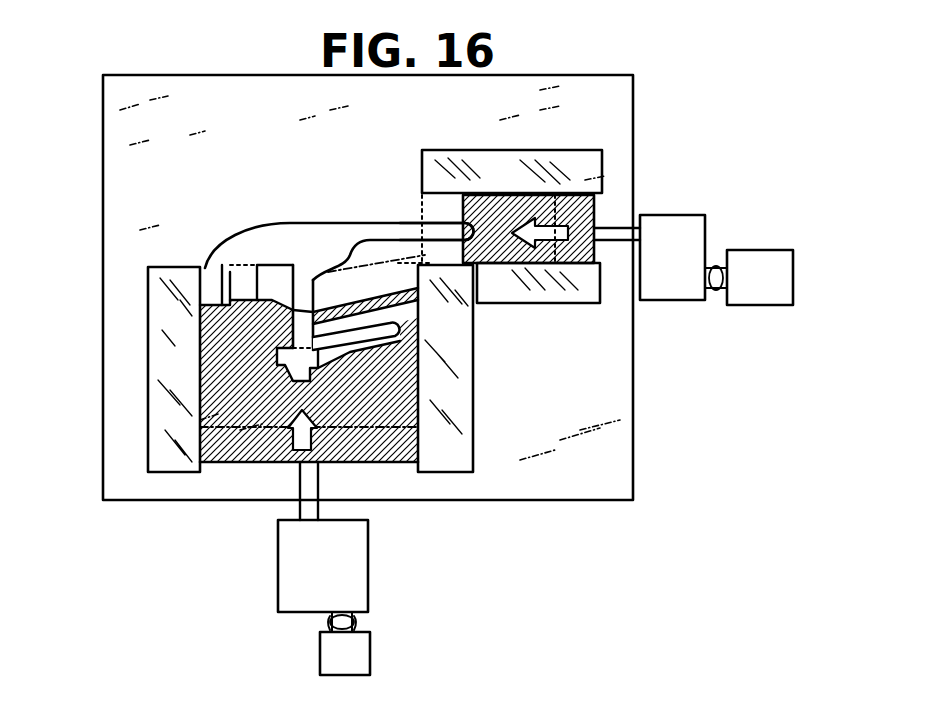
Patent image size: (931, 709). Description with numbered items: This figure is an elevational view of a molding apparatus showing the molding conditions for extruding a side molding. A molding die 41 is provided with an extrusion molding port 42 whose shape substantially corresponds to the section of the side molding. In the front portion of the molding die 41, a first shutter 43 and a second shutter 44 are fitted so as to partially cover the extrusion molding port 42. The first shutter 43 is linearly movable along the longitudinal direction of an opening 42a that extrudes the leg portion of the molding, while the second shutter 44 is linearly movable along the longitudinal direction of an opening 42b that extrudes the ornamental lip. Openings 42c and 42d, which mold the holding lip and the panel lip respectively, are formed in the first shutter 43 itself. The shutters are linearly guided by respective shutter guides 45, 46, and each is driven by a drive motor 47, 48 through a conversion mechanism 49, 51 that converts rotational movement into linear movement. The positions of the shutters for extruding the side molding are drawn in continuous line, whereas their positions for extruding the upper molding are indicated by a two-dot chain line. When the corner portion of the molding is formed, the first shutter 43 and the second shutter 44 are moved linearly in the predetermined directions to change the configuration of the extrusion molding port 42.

The molding die 41 is at (622, 112).
The extrusion molding port 42 is at (253, 238).
The opening for extruding the leg portion 42a is at (297, 316).
The opening for extruding the ornamental lip 42b is at (405, 226).
The opening for molding the holding lip 42c is at (275, 365).
The opening for molding the panel lip 42d is at (355, 345).
The first shutter 43 is at (405, 414).
The second shutter 44 is at (508, 250).
The shutter guide 45 is at (170, 466).
The shutter guide 46 is at (561, 162).
The drive motor 47 is at (360, 650).
The drive motor 48 is at (760, 305).
The conversion mechanism 49 is at (355, 557).
The conversion mechanism 51 is at (680, 300).